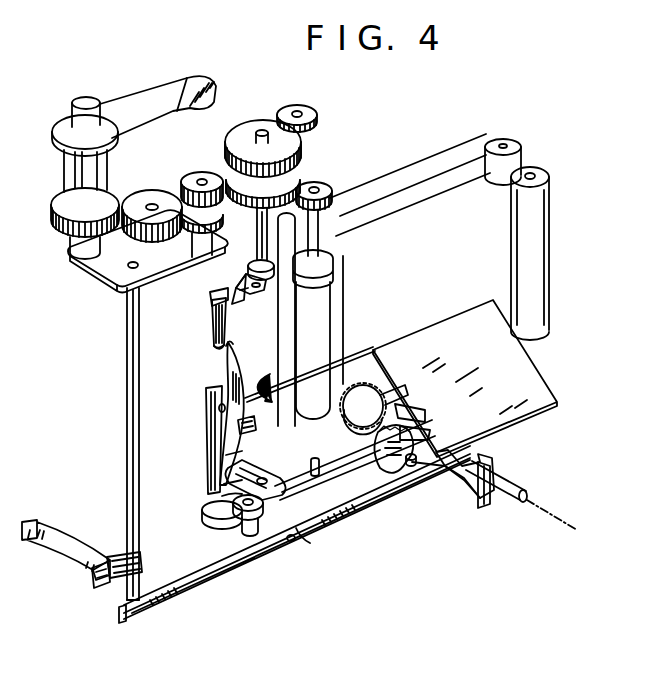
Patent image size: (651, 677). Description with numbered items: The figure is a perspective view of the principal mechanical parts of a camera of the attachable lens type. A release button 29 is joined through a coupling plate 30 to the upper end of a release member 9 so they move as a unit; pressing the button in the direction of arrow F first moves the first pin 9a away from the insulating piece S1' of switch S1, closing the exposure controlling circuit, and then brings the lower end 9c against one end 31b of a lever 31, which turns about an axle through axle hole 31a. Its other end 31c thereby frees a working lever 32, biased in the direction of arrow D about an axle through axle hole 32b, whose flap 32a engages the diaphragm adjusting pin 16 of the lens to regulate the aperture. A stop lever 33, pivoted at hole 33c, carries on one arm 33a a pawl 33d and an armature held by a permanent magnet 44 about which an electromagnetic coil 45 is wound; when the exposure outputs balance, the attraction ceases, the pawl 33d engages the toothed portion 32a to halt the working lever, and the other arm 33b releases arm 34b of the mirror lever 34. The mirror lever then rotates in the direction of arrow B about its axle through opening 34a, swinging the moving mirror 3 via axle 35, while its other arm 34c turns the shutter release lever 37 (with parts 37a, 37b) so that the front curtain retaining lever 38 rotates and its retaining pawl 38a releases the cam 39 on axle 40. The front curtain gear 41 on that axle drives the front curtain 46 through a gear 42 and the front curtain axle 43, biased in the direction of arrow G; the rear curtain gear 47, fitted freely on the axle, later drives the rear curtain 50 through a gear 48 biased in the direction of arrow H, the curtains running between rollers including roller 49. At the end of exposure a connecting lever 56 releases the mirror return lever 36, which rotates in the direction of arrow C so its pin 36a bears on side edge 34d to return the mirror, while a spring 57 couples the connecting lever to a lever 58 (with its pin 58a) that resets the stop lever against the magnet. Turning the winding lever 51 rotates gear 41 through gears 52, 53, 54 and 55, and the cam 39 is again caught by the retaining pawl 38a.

The moving mirror 3 is at (524, 373).
The release member 9 is at (126, 357).
The first pin 9a is at (108, 587).
The lower end 9c is at (128, 601).
The diaphragm adjusting pin 16 is at (502, 479).
The release button 29 is at (74, 114).
The coupling plate 30 is at (107, 277).
The lever 31 is at (204, 591).
The axle hole 31a is at (294, 541).
The one end 31b is at (118, 621).
The other end 31c is at (438, 481).
The working lever 32 is at (458, 463).
The flap 32a is at (484, 505).
The axle hole 32b is at (413, 463).
The stop lever 33 is at (358, 472).
The arm 33a is at (398, 409).
The other arm 33b is at (222, 495).
The hole 33c is at (306, 533).
The pawl 33d is at (410, 433).
The mirror lever 34 is at (228, 373).
The opening 34a is at (218, 399).
The arm 34b is at (224, 477).
The other arm 34c is at (246, 345).
The side edge 34d is at (236, 459).
The axle 35 is at (258, 379).
The mirror return lever 36 is at (208, 448).
The pin 36a is at (254, 432).
The shutter release lever 37 is at (212, 327).
The link lower end 37a is at (214, 349).
The link upper end 37b is at (212, 299).
The front curtain retaining lever 38 is at (256, 303).
The retaining pawl 38a is at (236, 285).
The cam 39 is at (257, 269).
The axle 40 is at (258, 227).
The front curtain gear 41 is at (230, 177).
The gear 42 is at (319, 183).
The front curtain axle 43 is at (548, 179).
The permanent magnet 44 is at (402, 393).
The electromagnetic coil 45 is at (348, 359).
The front curtain 46 is at (386, 203).
The rear curtain gear 47 is at (231, 135).
The gear 48 is at (280, 108).
The roller 49 is at (494, 143).
The rear curtain 50 is at (412, 179).
The winding lever 51 is at (120, 96).
The gear 52 is at (62, 196).
The gear 53 is at (136, 196).
The gear 54 is at (184, 209).
The gear 55 is at (190, 177).
The connecting lever 56 is at (232, 507).
The spring 57 is at (216, 533).
The lever 58 is at (268, 519).
The pin 58a is at (318, 479).
The arrow F is at (81, 88).
The arrow H is at (490, 120).
The arrow G is at (526, 144).
The arrow B is at (198, 404).
The arrow C is at (278, 412).
The arrow D is at (402, 443).
The switch S1 is at (66, 539).
The insulating piece S1' is at (115, 551).